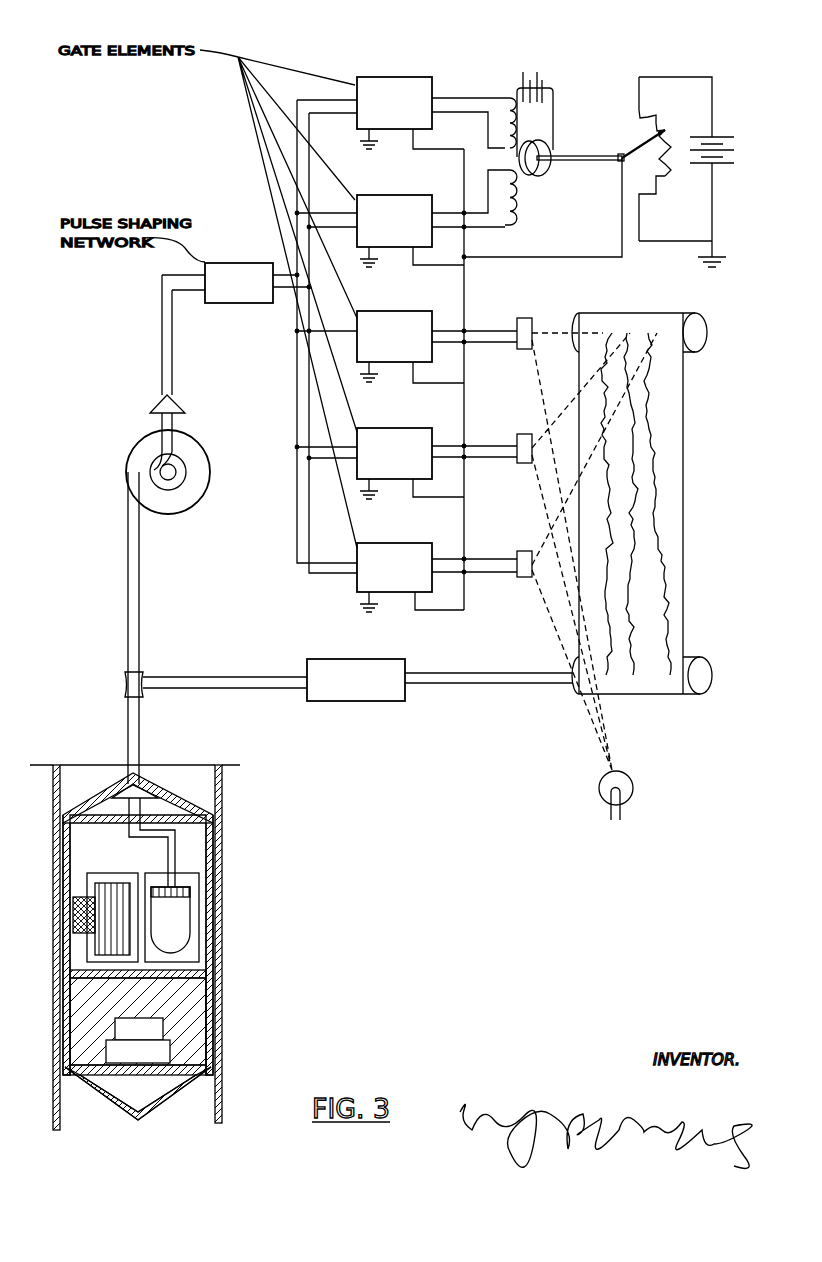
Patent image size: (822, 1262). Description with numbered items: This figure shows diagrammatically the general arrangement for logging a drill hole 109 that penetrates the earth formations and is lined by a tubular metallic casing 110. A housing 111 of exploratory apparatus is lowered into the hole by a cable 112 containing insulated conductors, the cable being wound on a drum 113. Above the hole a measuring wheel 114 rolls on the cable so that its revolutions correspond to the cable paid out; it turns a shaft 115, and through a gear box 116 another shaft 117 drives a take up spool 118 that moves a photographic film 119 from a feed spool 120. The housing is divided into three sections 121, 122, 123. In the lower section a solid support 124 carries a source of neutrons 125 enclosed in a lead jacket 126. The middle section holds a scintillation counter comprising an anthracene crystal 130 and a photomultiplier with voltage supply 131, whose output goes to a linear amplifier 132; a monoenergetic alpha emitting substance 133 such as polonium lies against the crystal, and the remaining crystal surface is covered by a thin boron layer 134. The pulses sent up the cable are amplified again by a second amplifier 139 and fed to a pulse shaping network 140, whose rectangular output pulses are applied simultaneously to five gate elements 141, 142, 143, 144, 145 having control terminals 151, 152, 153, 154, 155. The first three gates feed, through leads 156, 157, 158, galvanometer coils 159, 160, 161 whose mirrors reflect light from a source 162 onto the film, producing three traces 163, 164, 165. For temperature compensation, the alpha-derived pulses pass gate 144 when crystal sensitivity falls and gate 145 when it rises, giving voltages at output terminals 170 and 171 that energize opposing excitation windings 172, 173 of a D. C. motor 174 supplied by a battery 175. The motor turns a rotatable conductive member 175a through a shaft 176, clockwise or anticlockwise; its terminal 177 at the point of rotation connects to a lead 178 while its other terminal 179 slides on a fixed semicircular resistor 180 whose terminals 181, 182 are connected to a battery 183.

The drill hole 109 is at (207, 784).
The tubular metallic casing 110 is at (230, 809).
The housing 111 is at (200, 805).
The cable 112 is at (139, 583).
The drum 113 is at (128, 458).
The measuring wheel 114 is at (125, 686).
The shaft 115 is at (195, 680).
The gear box 116 is at (320, 672).
The shaft 117 is at (440, 675).
The take up spool 118 is at (700, 661).
The photographic film 119 is at (683, 566).
The feed spool 120 is at (700, 326).
The housing section 121 is at (187, 992).
The housing section 122 is at (193, 857).
The housing section 123 is at (180, 823).
The solid support 124 is at (167, 1052).
The source of neutrons 125 is at (160, 1027).
The jacket 126 is at (88, 1013).
The anthracene crystal 130 is at (100, 943).
The photomultiplier 131 is at (182, 920).
The linear amplifier 132 is at (95, 793).
The alpha ray emitting substance 133 is at (75, 921).
The boron layer 134 is at (95, 888).
The second amplifier 139 is at (151, 404).
The pulse shaping network 140 is at (236, 303).
The gate element 141 is at (388, 546).
The gate element 142 is at (384, 430).
The gate element 143 is at (388, 317).
The gate element 144 is at (394, 200).
The gate element 145 is at (388, 80).
The control terminal 151 is at (378, 594).
The control terminal 152 is at (378, 481).
The control terminal 153 is at (378, 364).
The control terminal 154 is at (378, 249).
The control terminal 155 is at (378, 131).
The lead 156 is at (481, 570).
The lead 157 is at (480, 457).
The lead 158 is at (480, 343).
The galvanometer coil 159 is at (524, 578).
The galvanometer coil 160 is at (521, 464).
The galvanometer coil 161 is at (521, 350).
The light source 162 is at (599, 788).
The trace 163 is at (657, 420).
The trace 164 is at (633, 448).
The trace 165 is at (607, 483).
The output terminals 170 is at (478, 228).
The output terminals 171 is at (470, 78).
The excitation winding 172 is at (516, 214).
The excitation winding 173 is at (508, 98).
The D. C. motor 174 is at (545, 150).
The battery 175 is at (540, 70).
The rotatable conductive member 175a is at (657, 175).
The shaft 176 is at (578, 163).
The terminal 177 is at (628, 155).
The lead 178 is at (580, 258).
The terminal 179 is at (668, 130).
The semicircular resistor 180 is at (668, 180).
The resistor terminal 181 is at (645, 100).
The resistor terminal 182 is at (643, 240).
The battery 183 is at (735, 150).